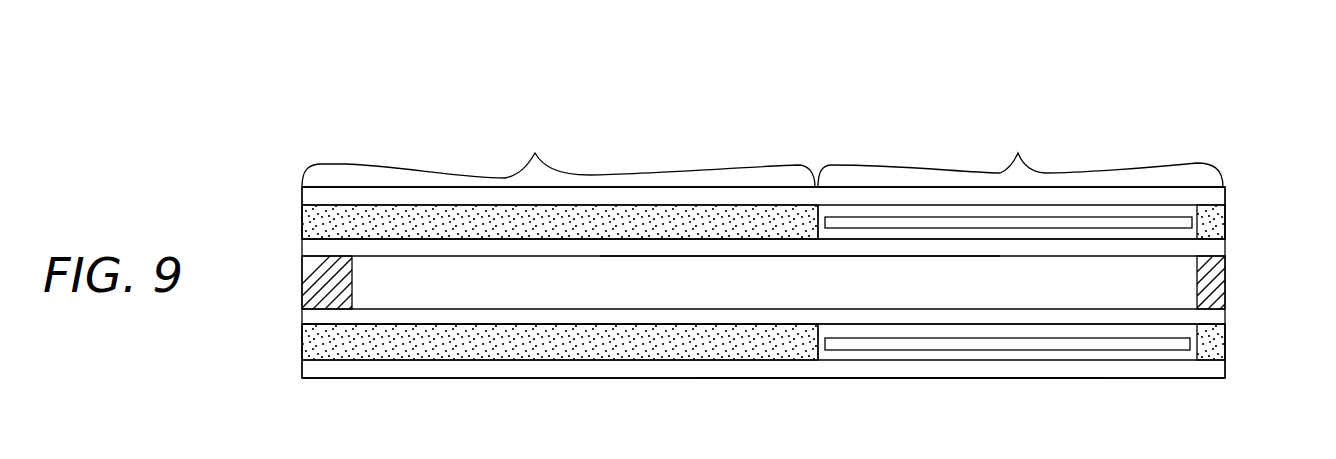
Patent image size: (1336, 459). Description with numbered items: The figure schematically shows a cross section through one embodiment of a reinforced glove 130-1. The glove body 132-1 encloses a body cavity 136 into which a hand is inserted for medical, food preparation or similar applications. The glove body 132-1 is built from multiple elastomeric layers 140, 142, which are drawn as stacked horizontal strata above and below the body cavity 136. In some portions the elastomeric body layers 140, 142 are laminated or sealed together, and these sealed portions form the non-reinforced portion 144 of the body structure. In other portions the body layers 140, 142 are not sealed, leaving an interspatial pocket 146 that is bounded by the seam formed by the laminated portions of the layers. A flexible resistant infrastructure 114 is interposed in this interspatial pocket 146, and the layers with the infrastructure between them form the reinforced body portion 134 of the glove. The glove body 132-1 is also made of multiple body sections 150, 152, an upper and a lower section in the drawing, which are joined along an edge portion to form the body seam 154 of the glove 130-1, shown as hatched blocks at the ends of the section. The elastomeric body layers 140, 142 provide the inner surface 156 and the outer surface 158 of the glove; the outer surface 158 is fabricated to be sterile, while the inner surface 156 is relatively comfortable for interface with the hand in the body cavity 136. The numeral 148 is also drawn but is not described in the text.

The glove 130-1 is at (803, 158).
The glove body 132-1 is at (588, 187).
The reinforced body portion 134 is at (1087, 173).
The body cavity 136 is at (640, 273).
The elastomeric layer 140 is at (485, 193).
The elastomeric layer 142 is at (380, 247).
The non-reinforced portion 144 is at (337, 165).
The interspatial pocket 146 is at (983, 354).
The upper electrode strip 148 is at (828, 222).
The body section 150 is at (292, 225).
The body section 152 is at (292, 347).
The body seam 154 is at (330, 275).
The inner surface 156 is at (812, 258).
The outer surface 158 is at (883, 378).
The resistant infrastructure 114 is at (1184, 223).